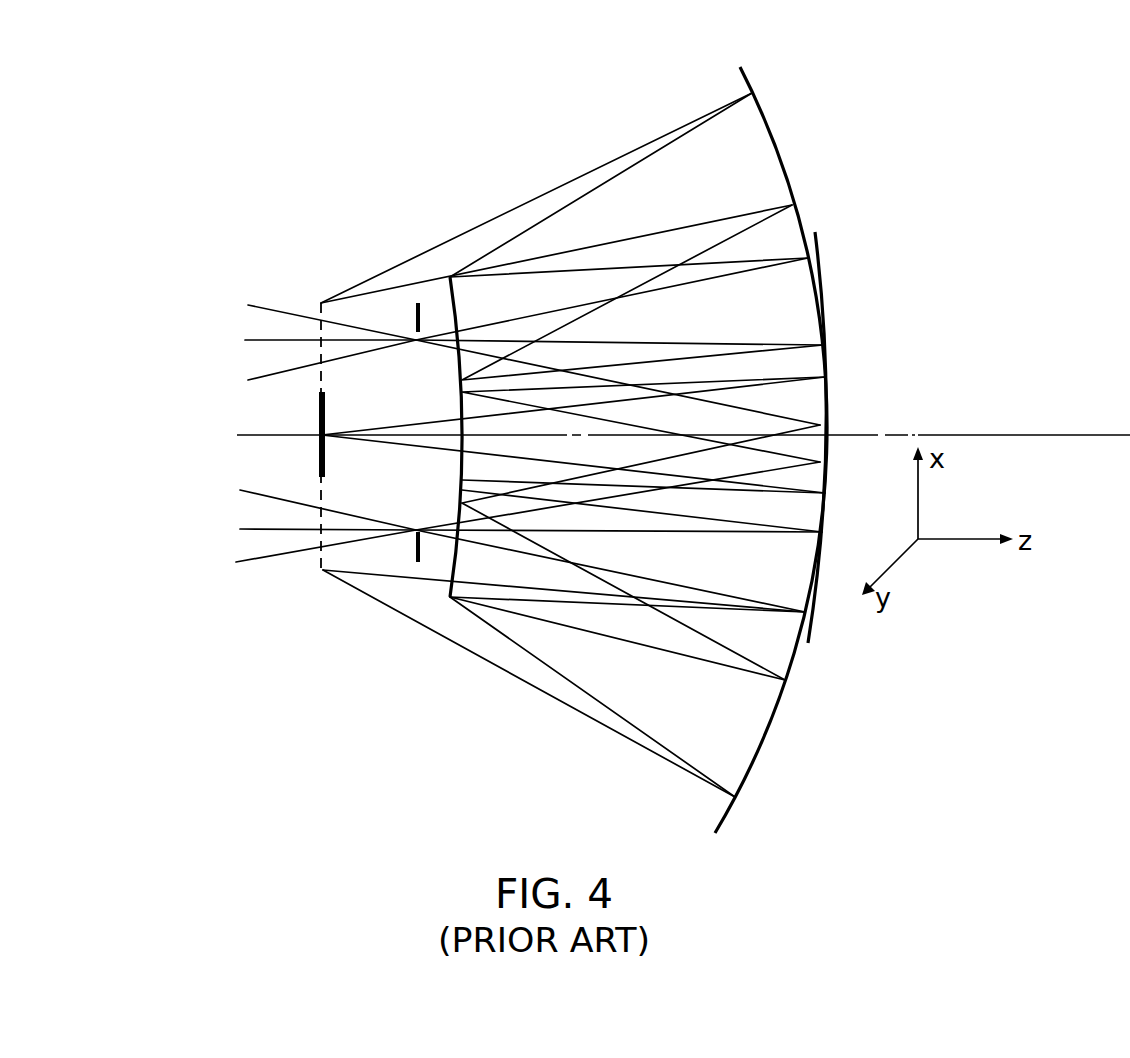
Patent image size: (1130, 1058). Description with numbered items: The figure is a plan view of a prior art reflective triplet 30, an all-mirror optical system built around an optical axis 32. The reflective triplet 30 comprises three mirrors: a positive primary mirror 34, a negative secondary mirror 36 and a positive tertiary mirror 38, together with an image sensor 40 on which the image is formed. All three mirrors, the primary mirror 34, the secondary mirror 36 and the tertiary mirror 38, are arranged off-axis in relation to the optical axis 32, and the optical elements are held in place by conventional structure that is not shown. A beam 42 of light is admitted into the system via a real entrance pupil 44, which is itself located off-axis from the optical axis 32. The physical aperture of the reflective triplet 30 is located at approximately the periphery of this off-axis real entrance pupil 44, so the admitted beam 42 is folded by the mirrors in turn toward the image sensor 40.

The reflective triplet 30 is at (910, 196).
The optical axis 32 is at (1050, 433).
The positive primary mirror 34 is at (828, 270).
The negative secondary mirror 36 is at (445, 578).
The positive tertiary mirror 38 is at (778, 157).
The image sensor 40 is at (320, 563).
The beam 42 is at (273, 390).
The real entrance pupil 44 is at (418, 303).